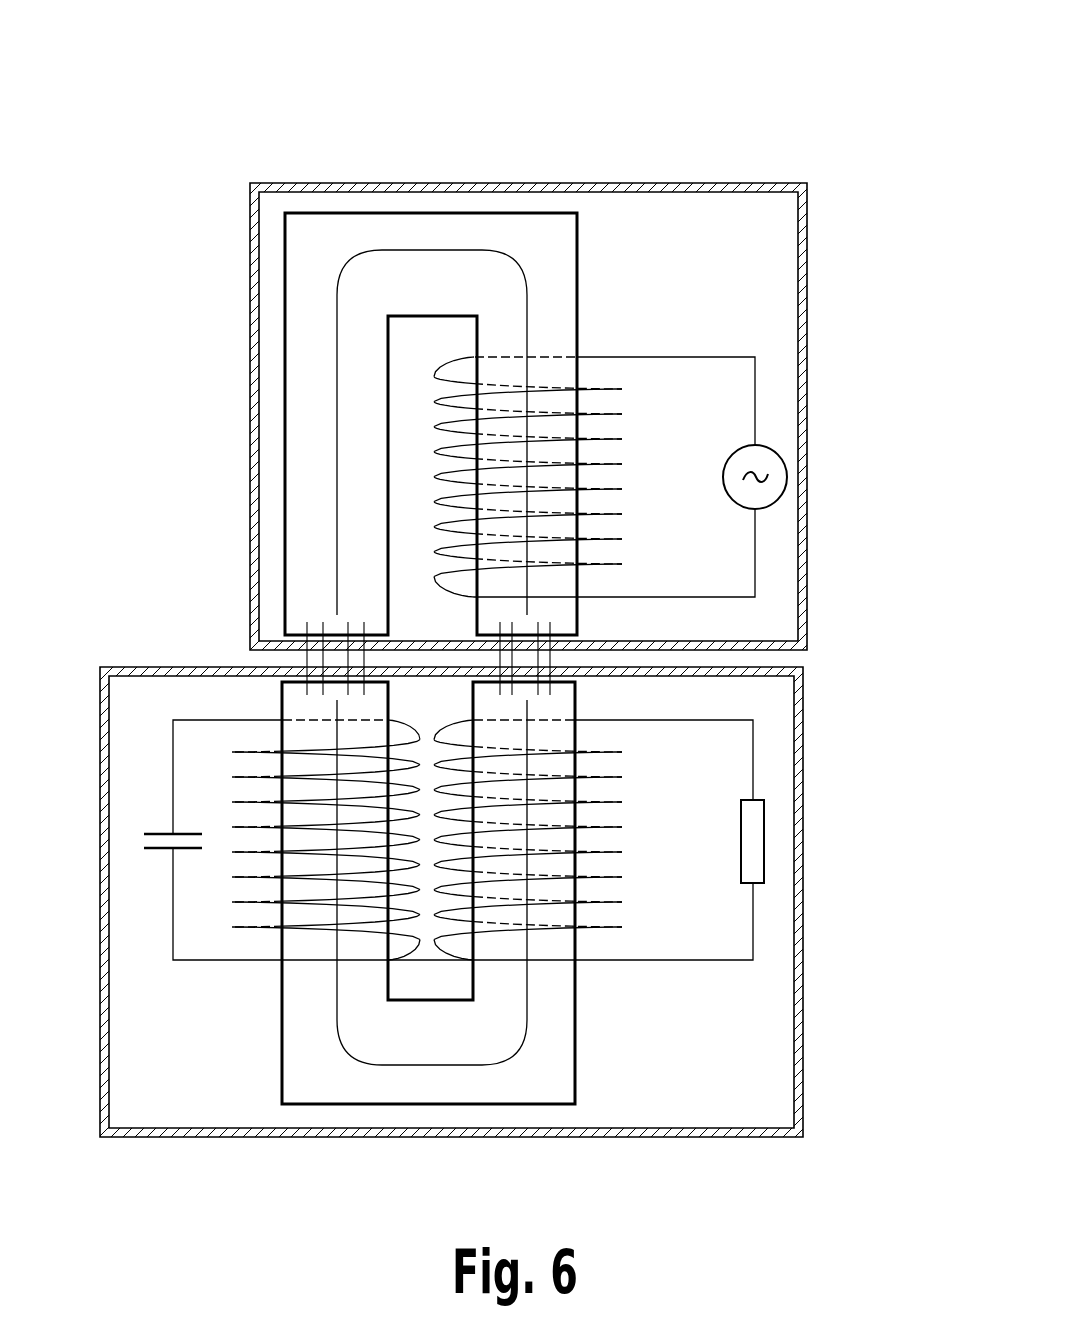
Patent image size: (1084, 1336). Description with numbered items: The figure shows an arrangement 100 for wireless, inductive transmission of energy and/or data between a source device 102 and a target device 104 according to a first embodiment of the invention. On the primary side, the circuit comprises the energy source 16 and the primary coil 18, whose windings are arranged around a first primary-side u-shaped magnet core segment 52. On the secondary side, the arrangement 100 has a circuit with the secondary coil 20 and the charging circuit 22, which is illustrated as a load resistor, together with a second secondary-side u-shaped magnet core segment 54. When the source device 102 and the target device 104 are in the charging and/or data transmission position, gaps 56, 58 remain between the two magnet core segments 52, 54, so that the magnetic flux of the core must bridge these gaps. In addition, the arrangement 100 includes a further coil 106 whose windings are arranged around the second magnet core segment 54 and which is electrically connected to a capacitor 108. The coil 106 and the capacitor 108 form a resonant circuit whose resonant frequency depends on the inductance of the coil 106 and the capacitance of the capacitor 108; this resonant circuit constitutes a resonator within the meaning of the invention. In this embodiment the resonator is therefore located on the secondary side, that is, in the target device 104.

The arrangement 100 is at (615, 88).
The source device 102 is at (808, 286).
The target device 104 is at (805, 706).
The first primary-side u-shaped magnet core segment 52 is at (553, 255).
The second secondary-side u-shaped magnet core segment 54 is at (550, 706).
The gap 56 is at (302, 657).
The gap 58 is at (558, 658).
The primary coil 18 is at (620, 487).
The energy source 16 is at (775, 479).
The secondary coil 20 is at (618, 852).
The charging circuit 22 is at (750, 843).
The coil 106 is at (234, 856).
The capacitor 108 is at (168, 833).